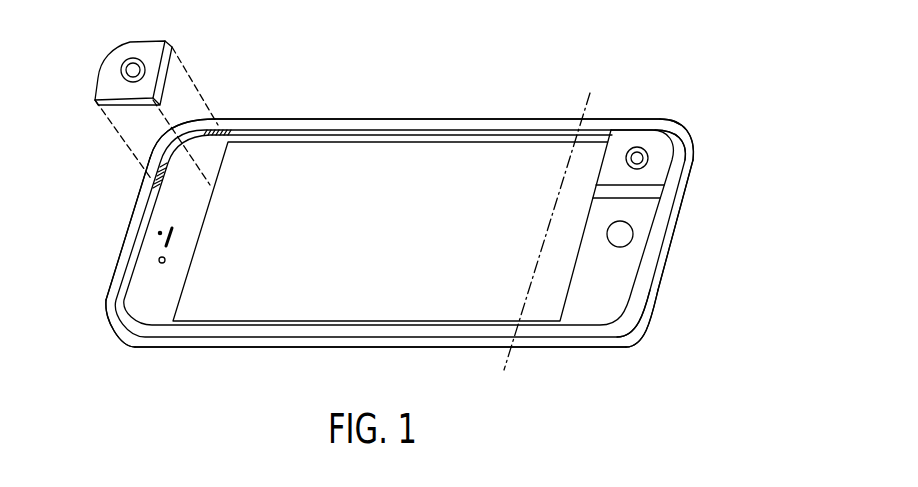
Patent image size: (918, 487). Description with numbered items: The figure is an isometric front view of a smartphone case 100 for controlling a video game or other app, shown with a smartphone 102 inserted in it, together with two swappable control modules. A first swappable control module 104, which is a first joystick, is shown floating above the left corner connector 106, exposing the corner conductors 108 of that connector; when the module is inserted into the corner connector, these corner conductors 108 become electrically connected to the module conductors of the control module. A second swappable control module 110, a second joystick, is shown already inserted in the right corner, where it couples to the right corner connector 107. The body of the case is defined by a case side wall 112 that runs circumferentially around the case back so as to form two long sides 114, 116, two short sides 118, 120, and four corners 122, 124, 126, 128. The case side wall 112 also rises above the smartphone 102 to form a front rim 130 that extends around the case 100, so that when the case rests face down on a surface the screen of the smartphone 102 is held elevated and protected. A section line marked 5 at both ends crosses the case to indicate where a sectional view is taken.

The smartphone case 100 is at (628, 78).
The smartphone 102 is at (357, 168).
The first swappable control module 104 is at (146, 44).
The left corner connector 106 is at (153, 150).
The right corner connector 107 is at (660, 128).
The corner conductors 108 is at (214, 120).
The second swappable control module 110 is at (655, 172).
The case side wall 112 is at (108, 283).
The long side 114 is at (430, 119).
The long side 116 is at (368, 347).
The short side 118 is at (130, 232).
The short side 120 is at (662, 258).
The corner 122 is at (168, 135).
The corner 124 is at (682, 132).
The corner 126 is at (110, 318).
The corner 128 is at (625, 328).
The front rim 130 is at (128, 273).
The section line 5- 5 is at (590, 93).